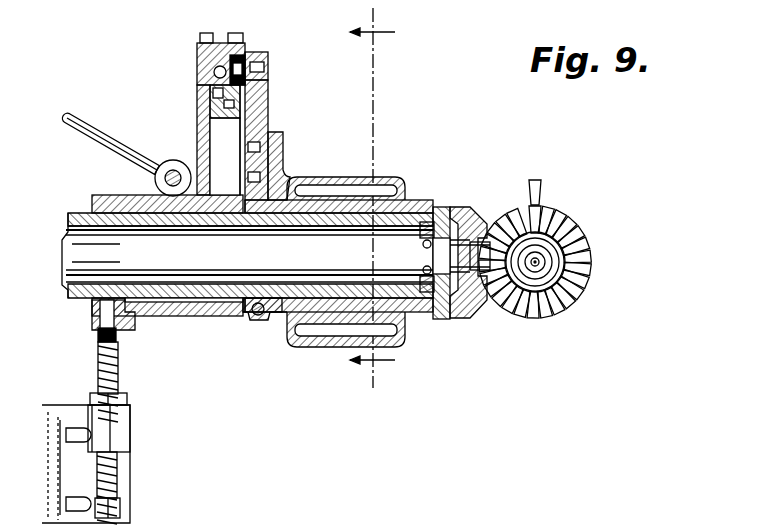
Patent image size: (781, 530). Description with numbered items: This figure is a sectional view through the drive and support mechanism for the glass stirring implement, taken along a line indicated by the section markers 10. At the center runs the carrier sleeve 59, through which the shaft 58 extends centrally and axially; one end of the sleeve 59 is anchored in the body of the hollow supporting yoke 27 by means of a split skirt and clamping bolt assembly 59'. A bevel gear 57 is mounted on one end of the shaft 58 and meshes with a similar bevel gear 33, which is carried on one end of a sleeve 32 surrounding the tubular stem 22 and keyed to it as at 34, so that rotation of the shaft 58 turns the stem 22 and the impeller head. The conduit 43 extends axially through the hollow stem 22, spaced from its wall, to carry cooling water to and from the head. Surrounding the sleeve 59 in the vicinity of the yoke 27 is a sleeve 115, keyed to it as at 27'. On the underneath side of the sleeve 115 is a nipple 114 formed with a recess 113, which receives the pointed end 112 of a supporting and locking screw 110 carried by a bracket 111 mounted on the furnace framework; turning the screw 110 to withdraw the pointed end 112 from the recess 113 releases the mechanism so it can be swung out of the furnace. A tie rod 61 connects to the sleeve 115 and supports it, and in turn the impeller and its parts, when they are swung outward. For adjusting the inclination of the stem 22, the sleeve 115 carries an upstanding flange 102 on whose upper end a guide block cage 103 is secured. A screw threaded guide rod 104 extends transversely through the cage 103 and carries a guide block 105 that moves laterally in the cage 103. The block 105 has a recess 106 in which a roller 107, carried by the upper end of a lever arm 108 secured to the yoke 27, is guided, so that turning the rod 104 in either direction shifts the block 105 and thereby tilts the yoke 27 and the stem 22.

The section line 10- 10 is at (372, 196).
The tubular stem 22 is at (570, 290).
The supporting yoke 27 is at (339, 184).
The key 27' is at (319, 331).
The sleeve 32 is at (540, 305).
The bevel gear 33 is at (555, 218).
The key 34 is at (560, 257).
The conduit 43 is at (548, 300).
The bevel gear 57 is at (472, 312).
The shaft 58 is at (398, 265).
The sleeve 59 is at (239, 268).
The split skirt and clamping bolt assembly 59' is at (262, 326).
The tie rod 61 is at (96, 122).
The upstanding flange 102 is at (197, 133).
The guide block cage 103 is at (210, 92).
The screw threaded guide rod 104 is at (200, 63).
The guide block 105 is at (214, 72).
The recess 106 is at (238, 62).
The roller 107 is at (262, 55).
The lever arm 108 is at (268, 97).
The supporting and locking screw 110 is at (118, 472).
The bracket 111 is at (122, 492).
The pointed end 112 is at (122, 330).
The recess 113 is at (100, 348).
The nipple 114 is at (98, 333).
The sleeve 115 is at (165, 312).